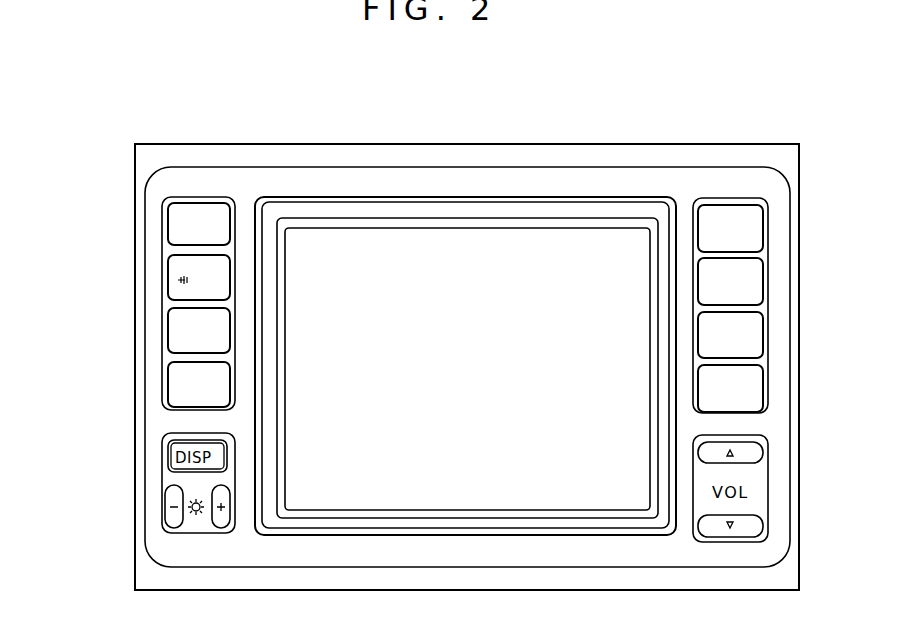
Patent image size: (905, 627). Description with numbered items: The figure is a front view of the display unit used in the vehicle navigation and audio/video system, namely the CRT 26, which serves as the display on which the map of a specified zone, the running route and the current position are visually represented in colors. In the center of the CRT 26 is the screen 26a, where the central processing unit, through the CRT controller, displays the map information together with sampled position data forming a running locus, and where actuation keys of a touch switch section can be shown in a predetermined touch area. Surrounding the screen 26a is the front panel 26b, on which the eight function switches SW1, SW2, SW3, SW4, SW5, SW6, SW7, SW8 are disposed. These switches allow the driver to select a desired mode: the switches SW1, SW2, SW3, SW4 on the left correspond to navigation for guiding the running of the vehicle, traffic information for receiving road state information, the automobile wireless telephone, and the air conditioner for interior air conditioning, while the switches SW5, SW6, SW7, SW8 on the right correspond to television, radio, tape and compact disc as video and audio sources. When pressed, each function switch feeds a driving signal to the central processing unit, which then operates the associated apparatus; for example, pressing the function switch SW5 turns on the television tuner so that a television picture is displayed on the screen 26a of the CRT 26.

The CRT 26 is at (188, 143).
The screen 26a is at (597, 243).
The front panel 26b is at (150, 421).
The function switch SW1 is at (164, 224).
The function switch SW2 is at (164, 278).
The function switch SW3 is at (164, 333).
The function switch SW4 is at (164, 383).
The function switch SW5 is at (764, 215).
The function switch SW6 is at (764, 270).
The function switch SW7 is at (764, 325).
The function switch SW8 is at (764, 378).